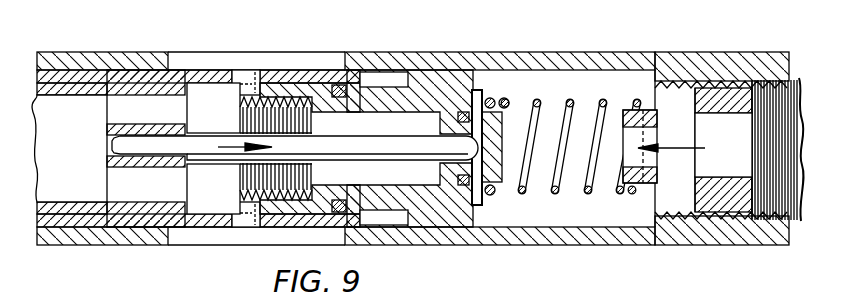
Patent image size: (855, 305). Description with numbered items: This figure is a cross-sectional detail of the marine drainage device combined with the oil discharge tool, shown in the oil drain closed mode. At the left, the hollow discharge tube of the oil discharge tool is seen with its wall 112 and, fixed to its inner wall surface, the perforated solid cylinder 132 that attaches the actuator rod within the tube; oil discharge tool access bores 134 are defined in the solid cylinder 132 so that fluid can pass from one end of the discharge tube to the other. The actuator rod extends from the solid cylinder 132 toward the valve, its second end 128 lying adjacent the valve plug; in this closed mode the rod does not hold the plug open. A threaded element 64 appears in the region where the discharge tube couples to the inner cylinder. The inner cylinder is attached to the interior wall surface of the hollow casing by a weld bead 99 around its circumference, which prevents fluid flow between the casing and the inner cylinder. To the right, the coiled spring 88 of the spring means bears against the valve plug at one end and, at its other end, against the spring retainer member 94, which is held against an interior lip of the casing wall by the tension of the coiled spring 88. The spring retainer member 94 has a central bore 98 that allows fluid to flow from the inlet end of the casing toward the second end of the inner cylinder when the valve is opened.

The threaded nut 64 is at (242, 120).
The coiled spring 88 is at (484, 156).
The spring retainer member 94 is at (650, 110).
The central bore 98 is at (650, 138).
The weld bead 99 is at (442, 68).
The wall 112 is at (60, 178).
The second end 128 is at (489, 196).
The perforated solid cylinder 132 is at (118, 217).
The oil discharge tool access bores 134 is at (167, 187).